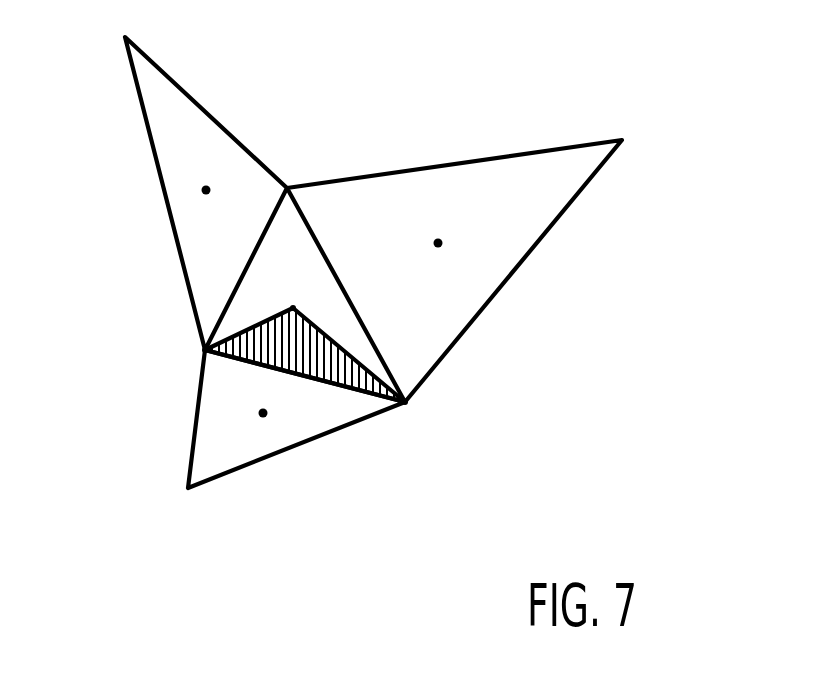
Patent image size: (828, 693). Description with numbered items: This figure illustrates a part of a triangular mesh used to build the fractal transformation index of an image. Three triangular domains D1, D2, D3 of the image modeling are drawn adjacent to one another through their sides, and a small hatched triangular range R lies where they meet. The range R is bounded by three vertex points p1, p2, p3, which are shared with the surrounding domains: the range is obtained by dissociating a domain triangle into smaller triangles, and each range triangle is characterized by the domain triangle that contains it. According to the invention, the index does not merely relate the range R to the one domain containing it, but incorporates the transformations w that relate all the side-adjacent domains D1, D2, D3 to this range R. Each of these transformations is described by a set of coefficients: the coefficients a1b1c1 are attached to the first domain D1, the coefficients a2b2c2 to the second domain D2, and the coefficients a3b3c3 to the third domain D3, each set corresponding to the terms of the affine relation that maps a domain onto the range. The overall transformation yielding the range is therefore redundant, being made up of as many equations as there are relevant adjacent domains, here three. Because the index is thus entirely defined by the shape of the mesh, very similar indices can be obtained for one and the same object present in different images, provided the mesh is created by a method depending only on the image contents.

The first domain D1 is at (163, 122).
The second domain D2 is at (475, 168).
The third domain D3 is at (225, 458).
The range R is at (240, 330).
The first vertex point p1 is at (201, 353).
The second vertex point p2 is at (407, 403).
The third vertex point p3 is at (313, 298).
The transformation coefficients of first domain a1b1c1 is at (206, 190).
The transformation coefficients of second domain a2b2c2 is at (438, 243).
The transformation coefficients of third domain a3b3c3 is at (263, 413).